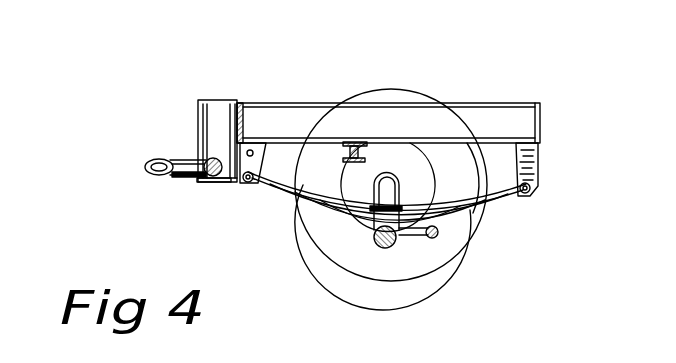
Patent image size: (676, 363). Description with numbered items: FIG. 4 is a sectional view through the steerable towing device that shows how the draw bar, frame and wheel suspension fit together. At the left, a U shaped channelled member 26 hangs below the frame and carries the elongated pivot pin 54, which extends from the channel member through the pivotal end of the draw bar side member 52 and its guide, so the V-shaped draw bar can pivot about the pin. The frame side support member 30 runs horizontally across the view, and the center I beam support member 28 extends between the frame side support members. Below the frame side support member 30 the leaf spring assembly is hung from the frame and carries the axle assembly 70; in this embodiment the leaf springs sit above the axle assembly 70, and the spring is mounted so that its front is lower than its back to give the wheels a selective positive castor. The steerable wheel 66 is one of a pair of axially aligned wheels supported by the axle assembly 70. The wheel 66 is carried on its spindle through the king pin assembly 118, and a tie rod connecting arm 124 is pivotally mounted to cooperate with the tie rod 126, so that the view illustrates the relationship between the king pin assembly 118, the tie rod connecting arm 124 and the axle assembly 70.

The U shaped channelled member 26 is at (217, 100).
The center I beam support member 28 is at (343, 158).
The frame side support member 30 is at (277, 103).
The draw bar side member 52 is at (173, 160).
The elongated pivot pin 54 is at (196, 179).
The steerable wheel 66 is at (360, 281).
The axle assembly 70 is at (370, 239).
The king pin assembly 118 is at (375, 192).
The tie rod connecting arm 124 is at (408, 232).
The tie rod 126 is at (437, 234).